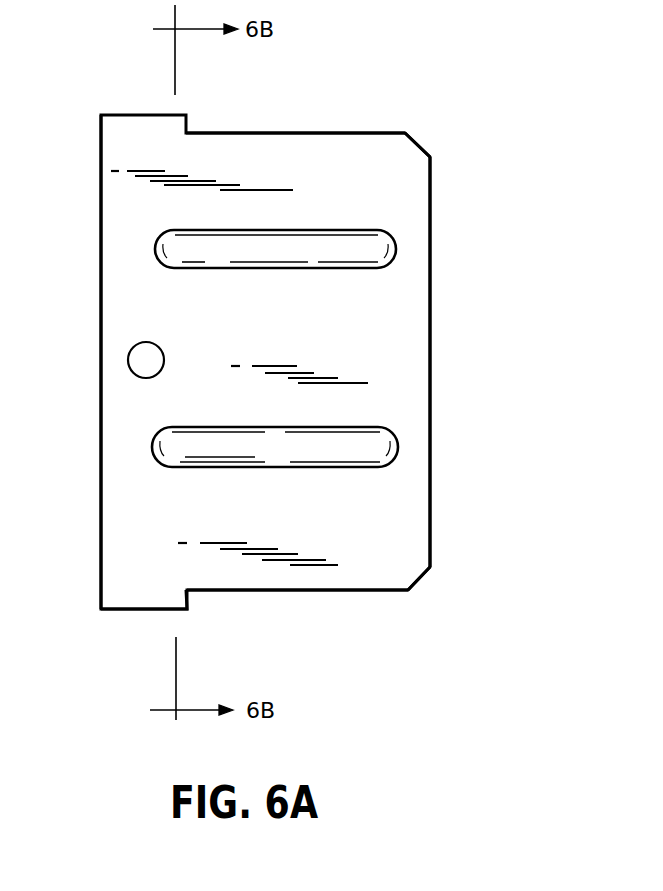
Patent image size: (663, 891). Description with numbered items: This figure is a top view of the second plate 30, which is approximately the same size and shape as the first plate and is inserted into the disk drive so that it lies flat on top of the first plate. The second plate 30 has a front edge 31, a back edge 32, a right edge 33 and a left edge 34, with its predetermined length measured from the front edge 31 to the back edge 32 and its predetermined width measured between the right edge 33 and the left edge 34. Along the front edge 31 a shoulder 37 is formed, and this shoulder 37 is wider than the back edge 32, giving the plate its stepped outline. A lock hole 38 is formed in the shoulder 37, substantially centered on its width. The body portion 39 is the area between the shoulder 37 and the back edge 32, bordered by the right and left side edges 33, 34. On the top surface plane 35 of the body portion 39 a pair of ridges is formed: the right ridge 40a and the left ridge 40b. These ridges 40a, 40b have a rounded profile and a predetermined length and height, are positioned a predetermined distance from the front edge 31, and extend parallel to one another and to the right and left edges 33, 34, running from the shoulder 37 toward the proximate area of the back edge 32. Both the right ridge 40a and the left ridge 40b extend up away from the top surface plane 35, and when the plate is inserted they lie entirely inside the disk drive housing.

The second plate 30 is at (310, 325).
The front edge 31 is at (100, 408).
The back edge 32 is at (432, 395).
The right edge 33 is at (320, 600).
The left edge 34 is at (292, 132).
The top surface plane 35 is at (408, 163).
The shoulder 37 is at (118, 563).
The lock hole 38 is at (160, 345).
The body portion 39 is at (416, 549).
The right ridge 40a is at (290, 467).
The left ridge 40b is at (262, 268).